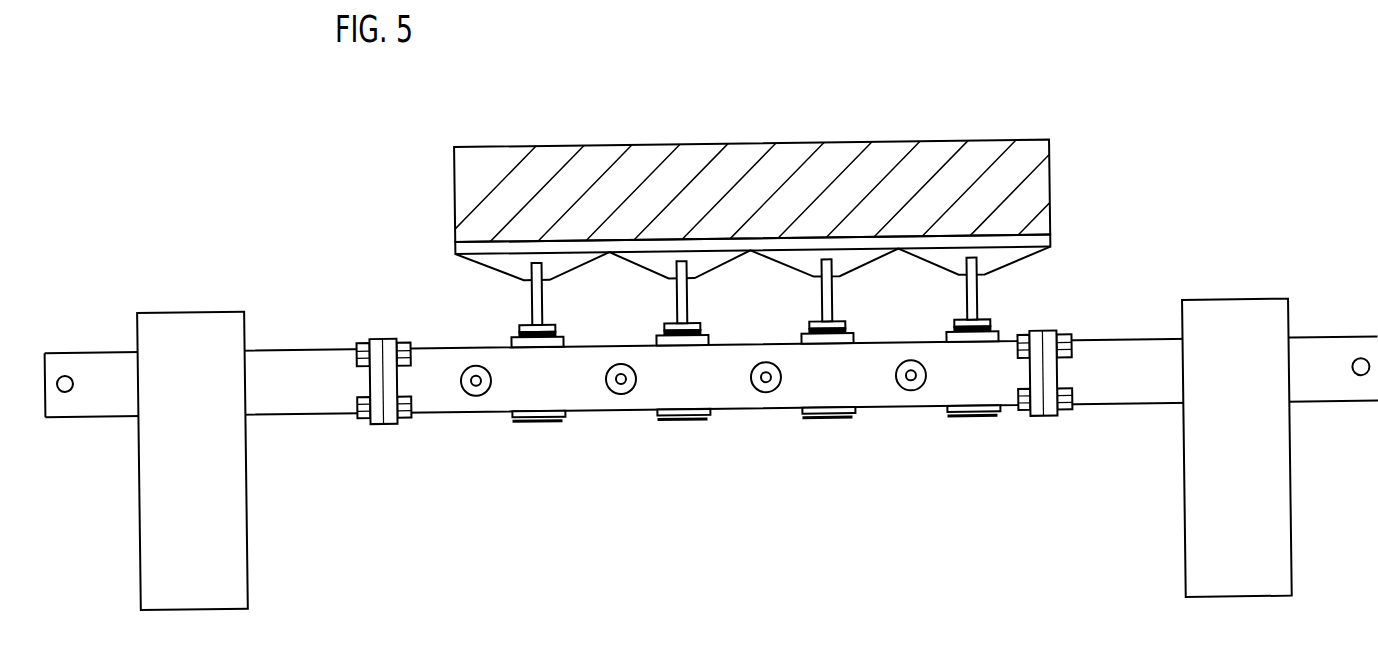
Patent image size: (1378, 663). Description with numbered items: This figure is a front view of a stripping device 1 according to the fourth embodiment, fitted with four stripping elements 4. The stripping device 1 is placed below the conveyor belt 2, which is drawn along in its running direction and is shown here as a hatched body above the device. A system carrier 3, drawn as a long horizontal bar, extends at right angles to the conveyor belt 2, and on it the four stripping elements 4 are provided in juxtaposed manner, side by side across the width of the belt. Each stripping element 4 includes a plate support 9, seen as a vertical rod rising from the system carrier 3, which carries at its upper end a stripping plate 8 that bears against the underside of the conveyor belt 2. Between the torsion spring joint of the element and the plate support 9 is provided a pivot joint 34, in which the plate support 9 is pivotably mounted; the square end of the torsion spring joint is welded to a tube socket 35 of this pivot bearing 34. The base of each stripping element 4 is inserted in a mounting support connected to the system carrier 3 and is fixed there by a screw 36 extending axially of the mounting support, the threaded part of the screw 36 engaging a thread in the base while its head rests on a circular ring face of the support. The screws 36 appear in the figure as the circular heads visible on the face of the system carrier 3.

The stripping device 1 is at (1100, 190).
The conveyor belt 2 is at (890, 165).
The system carrier 3 is at (301, 397).
The stripping element 4 is at (963, 295).
The stripping plate 8 is at (969, 247).
The plate support 9 is at (1003, 294).
The pivot joint 34 is at (1004, 420).
The tube socket 35 is at (990, 418).
The screw 36 is at (781, 380).